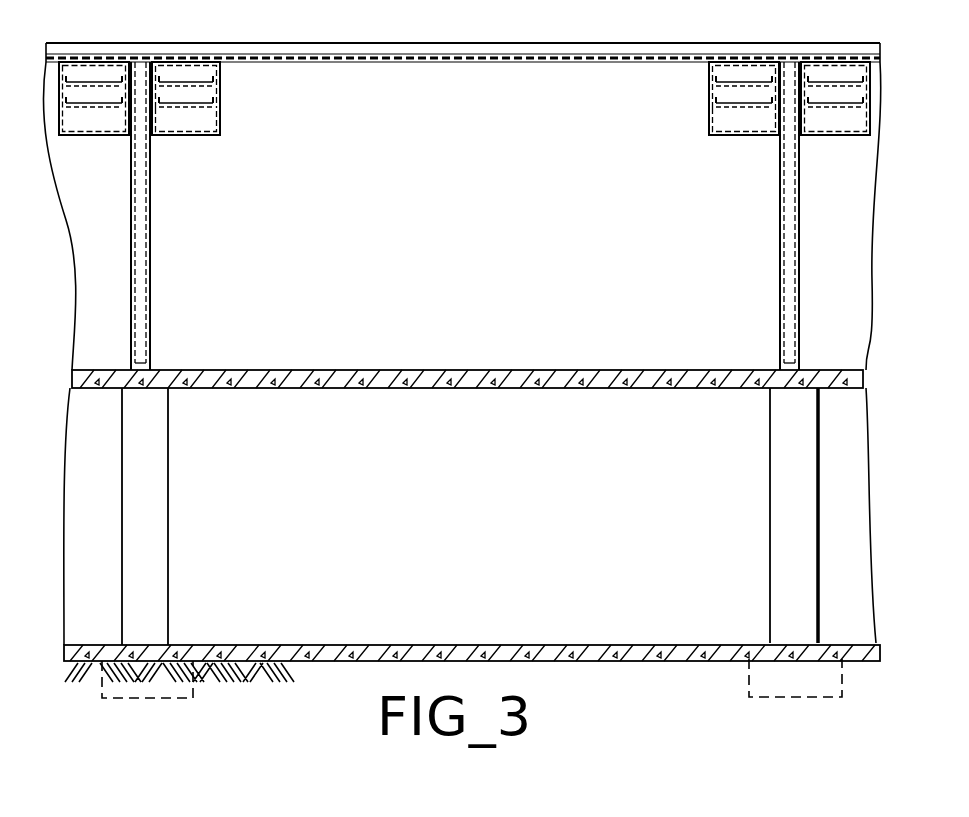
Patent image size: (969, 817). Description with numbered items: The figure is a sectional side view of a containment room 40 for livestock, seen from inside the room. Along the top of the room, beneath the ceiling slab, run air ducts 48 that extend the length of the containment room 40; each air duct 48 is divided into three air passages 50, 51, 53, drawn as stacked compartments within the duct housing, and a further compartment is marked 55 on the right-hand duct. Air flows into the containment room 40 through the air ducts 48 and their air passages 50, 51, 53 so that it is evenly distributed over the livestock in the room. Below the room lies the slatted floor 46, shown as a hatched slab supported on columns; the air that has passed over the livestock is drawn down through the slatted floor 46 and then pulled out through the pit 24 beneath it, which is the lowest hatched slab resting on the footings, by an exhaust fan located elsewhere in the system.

The pit 24 is at (588, 610).
The containment room 40 is at (477, 85).
The slatted floor 46 is at (500, 370).
The air ducts 48 is at (86, 137).
The air passage 50 is at (205, 67).
The air passage 51 is at (205, 90).
The air passage 53 is at (200, 116).
The lower compartment 55 is at (725, 115).